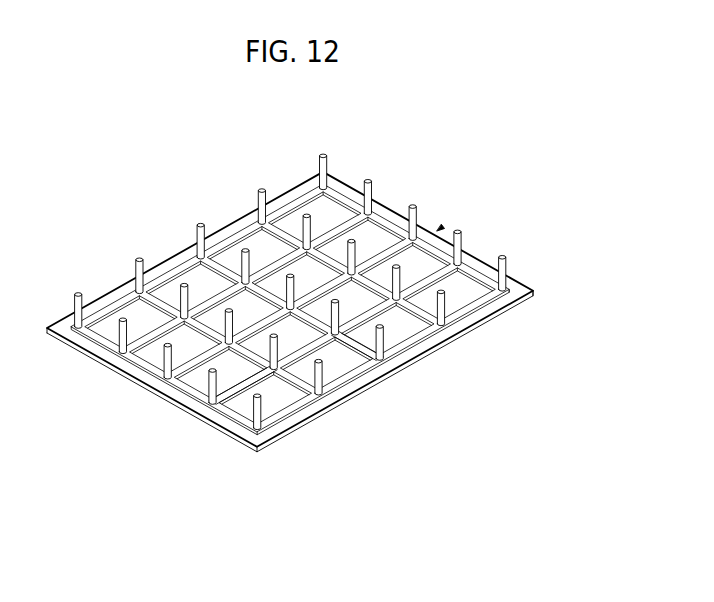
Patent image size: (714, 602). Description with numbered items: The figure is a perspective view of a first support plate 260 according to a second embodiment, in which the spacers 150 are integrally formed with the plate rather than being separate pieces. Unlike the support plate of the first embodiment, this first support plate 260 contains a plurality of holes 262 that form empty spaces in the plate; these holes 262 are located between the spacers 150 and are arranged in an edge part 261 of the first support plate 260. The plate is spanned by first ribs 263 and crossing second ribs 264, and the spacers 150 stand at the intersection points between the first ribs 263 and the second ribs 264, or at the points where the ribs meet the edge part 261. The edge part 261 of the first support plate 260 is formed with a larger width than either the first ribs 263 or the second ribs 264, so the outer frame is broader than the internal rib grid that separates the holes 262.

The first support plate 260 is at (441, 227).
The edge part 261 is at (413, 347).
The holes 262 is at (324, 212).
The first ribs 263 is at (258, 372).
The second ribs 264 is at (357, 347).
The spacers 150 is at (213, 392).